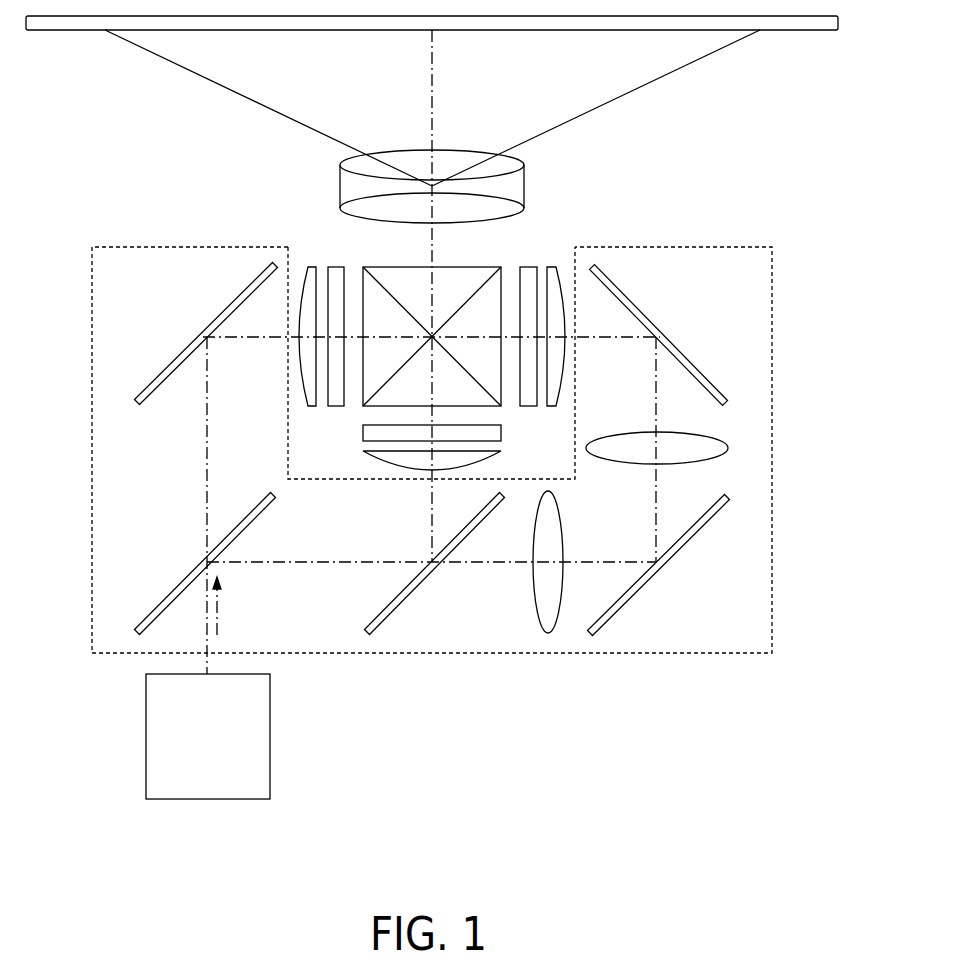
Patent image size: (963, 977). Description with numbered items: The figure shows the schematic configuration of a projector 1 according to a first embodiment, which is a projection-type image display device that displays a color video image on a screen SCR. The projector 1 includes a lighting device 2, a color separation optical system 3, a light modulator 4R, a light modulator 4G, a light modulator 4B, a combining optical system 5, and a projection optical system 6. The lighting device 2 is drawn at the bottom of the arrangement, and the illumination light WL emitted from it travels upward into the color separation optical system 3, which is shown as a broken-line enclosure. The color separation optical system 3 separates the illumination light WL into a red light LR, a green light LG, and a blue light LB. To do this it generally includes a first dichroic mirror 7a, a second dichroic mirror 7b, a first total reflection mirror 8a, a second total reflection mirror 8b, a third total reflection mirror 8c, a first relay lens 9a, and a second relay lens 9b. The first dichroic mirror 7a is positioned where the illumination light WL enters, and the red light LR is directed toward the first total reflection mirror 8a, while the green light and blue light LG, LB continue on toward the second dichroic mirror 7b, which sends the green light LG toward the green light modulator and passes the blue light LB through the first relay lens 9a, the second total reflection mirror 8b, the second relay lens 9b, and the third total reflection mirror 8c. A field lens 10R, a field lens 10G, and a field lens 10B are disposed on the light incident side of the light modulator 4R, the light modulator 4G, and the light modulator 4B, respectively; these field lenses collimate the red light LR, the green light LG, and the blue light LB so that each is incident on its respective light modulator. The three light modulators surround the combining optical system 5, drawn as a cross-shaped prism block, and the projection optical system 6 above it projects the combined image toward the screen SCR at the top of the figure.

The projector 1 is at (778, 227).
The lighting device 2 is at (270, 733).
The color separation optical system 3 is at (92, 392).
The light modulator 4R is at (334, 265).
The light modulator 4G is at (368, 433).
The light modulator 4B is at (528, 265).
The combining optical system 5 is at (455, 273).
The projection optical system 6 is at (413, 162).
The first dichroic mirror 7a is at (168, 595).
The second dichroic mirror 7b is at (410, 597).
The first total reflection mirror 8a is at (183, 353).
The second total reflection mirror 8b is at (680, 547).
The third total reflection mirror 8c is at (685, 355).
The first relay lens 9a is at (533, 584).
The second relay lens 9b is at (727, 440).
The field lens 10R is at (313, 265).
The field lens 10G is at (368, 458).
The field lens 10B is at (548, 265).
The screen SCR is at (805, 31).
The illumination light WL is at (222, 606).
The red light LR is at (205, 470).
The green light LG is at (428, 517).
The blue light LB is at (653, 508).
The green light and blue light LG, LB is at (278, 566).